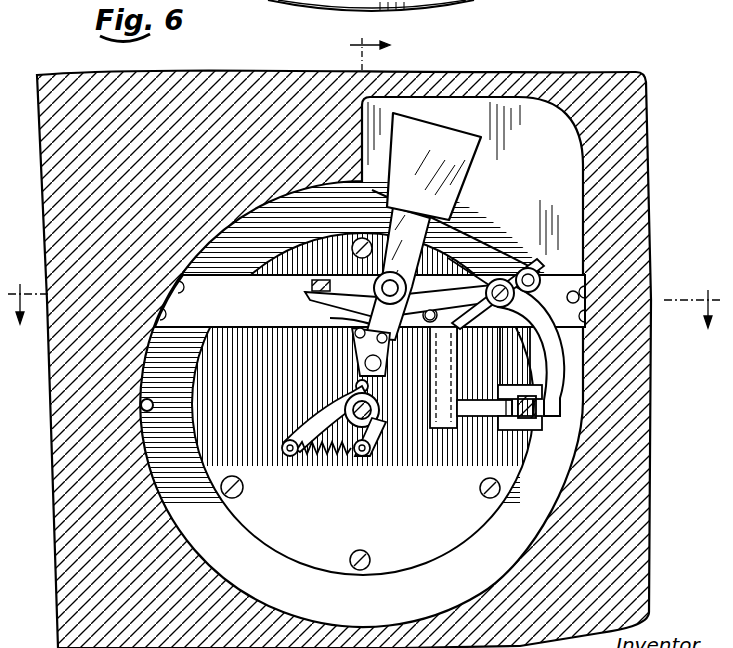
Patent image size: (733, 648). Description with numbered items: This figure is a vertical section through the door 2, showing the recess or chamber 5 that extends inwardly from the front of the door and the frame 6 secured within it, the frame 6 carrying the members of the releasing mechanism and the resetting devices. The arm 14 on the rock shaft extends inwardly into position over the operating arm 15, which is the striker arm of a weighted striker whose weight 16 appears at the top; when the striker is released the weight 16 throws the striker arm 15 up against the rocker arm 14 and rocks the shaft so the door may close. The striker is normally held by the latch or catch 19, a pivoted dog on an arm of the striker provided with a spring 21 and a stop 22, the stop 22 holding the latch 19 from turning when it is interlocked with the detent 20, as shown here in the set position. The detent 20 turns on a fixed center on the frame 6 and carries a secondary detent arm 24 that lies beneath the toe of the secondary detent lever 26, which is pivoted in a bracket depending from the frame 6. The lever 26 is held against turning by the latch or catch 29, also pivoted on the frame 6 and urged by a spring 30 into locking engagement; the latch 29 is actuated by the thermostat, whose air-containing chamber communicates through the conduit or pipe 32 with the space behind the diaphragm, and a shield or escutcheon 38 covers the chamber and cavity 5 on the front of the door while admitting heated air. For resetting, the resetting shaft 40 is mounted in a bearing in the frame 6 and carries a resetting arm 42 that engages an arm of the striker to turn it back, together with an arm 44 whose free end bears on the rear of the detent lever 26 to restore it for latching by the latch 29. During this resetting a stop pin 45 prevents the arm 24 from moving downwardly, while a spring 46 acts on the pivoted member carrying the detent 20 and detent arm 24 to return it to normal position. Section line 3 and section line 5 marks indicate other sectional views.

The door 2 is at (628, 158).
The section line 3 is at (379, 52).
The recess or chamber 5 is at (365, 317).
The frame 6 is at (570, 290).
The arm 14 is at (275, 305).
The operating arm 15 is at (374, 292).
The weight 16 is at (423, 226).
The latch or catch 19 is at (356, 386).
The detent 20 is at (326, 419).
The spring 21 is at (332, 320).
The stop 22 is at (360, 355).
The secondary detent arm 24 is at (380, 422).
The secondary detent lever 26 is at (536, 424).
The latch or catch 29 is at (456, 420).
The spring 30 is at (470, 400).
The conduit or pipe 32 is at (141, 406).
The shield or escutcheon 38 is at (462, 3).
The resetting shaft 40 is at (530, 268).
The resetting arm 42 is at (500, 282).
The arm 44 is at (556, 372).
The stop pin 45 is at (374, 450).
The spring 46 is at (296, 458).